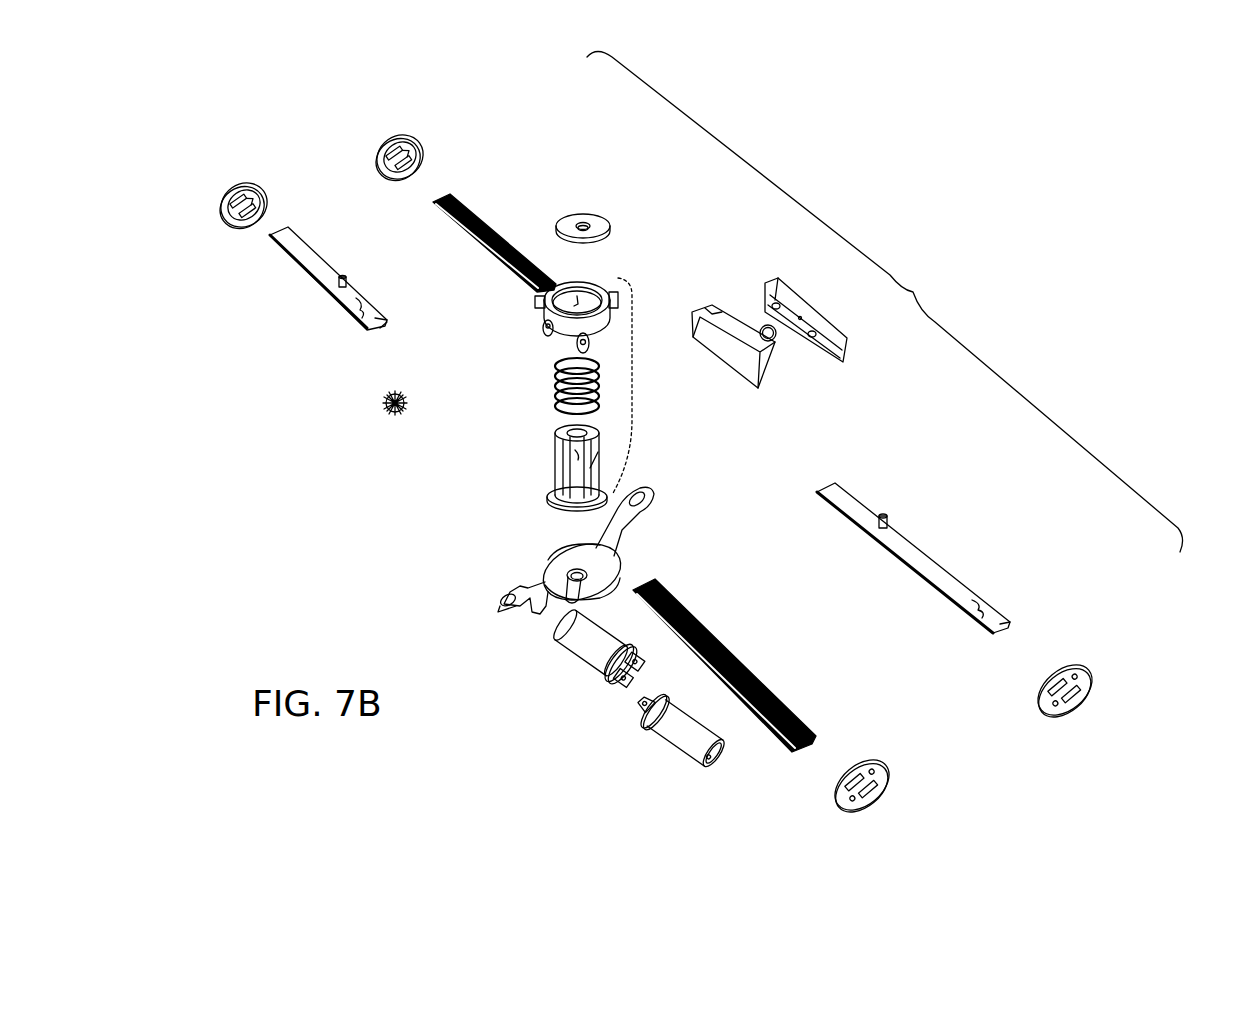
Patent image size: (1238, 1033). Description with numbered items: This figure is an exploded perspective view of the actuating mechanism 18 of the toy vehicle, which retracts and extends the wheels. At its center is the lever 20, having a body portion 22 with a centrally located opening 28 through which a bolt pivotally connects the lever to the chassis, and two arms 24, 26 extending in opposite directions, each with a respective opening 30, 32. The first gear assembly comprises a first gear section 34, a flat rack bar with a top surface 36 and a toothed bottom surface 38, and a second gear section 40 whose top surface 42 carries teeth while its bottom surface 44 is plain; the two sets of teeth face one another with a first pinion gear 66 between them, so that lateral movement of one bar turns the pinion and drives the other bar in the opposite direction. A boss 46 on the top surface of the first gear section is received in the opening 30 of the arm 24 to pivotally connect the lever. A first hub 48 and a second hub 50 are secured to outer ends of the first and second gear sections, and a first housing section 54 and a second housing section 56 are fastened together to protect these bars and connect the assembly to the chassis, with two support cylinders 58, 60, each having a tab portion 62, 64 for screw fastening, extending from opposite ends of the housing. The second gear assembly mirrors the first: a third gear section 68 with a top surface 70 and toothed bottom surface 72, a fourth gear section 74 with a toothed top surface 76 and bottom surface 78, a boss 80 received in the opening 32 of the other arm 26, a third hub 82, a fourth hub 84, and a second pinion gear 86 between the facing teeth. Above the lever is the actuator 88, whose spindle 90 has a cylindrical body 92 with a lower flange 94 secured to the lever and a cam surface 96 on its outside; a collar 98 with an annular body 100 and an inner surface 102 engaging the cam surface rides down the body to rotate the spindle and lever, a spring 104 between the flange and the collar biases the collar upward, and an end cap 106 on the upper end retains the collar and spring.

The actuating mechanism 18 is at (913, 292).
The lever 20 is at (536, 577).
The body portion 22 is at (565, 556).
The arm 24 is at (632, 515).
The arm 26 is at (520, 587).
The opening 28 is at (572, 582).
The opening 30 is at (648, 492).
The opening 32 is at (498, 604).
The first gear section 34 is at (922, 553).
The first, top surface 36 is at (985, 603).
The second, bottom surface 38 is at (892, 552).
The second gear section 40 is at (465, 206).
The first, top surface 42 is at (492, 222).
The second bottom surface 44 is at (456, 226).
The boss 46 is at (885, 512).
The first hub 48 is at (1060, 706).
The second hub 50 is at (390, 138).
The first housing section 54 is at (802, 292).
The second housing section 56 is at (708, 330).
The support cylinder 58 is at (690, 742).
The support cylinder 60 is at (592, 650).
The tab portion 62 is at (644, 722).
The tab portion 64 is at (602, 680).
The first pinion gear 66 is at (778, 343).
The third gear section 68 is at (300, 245).
The first, top surface 70 is at (352, 306).
The second, bottom surface 72 is at (375, 332).
The fourth gear section 74 is at (788, 702).
The first, top surface 76 is at (660, 598).
The second bottom surface 78 is at (782, 745).
The boss 80 is at (338, 283).
The third hub 82 is at (235, 188).
The fourth hub 84 is at (870, 802).
The second pinion gear 86 is at (385, 406).
The actuator 88 is at (636, 403).
The spindle 90 is at (555, 473).
The cylindrical body 92 is at (560, 430).
The lower flange 94 is at (547, 494).
The cam surface 96 is at (556, 455).
The collar 98 is at (585, 290).
The annular body 100 is at (540, 303).
The inner surface 102 is at (575, 304).
The spring 104 is at (558, 362).
The end cap 106 is at (600, 220).